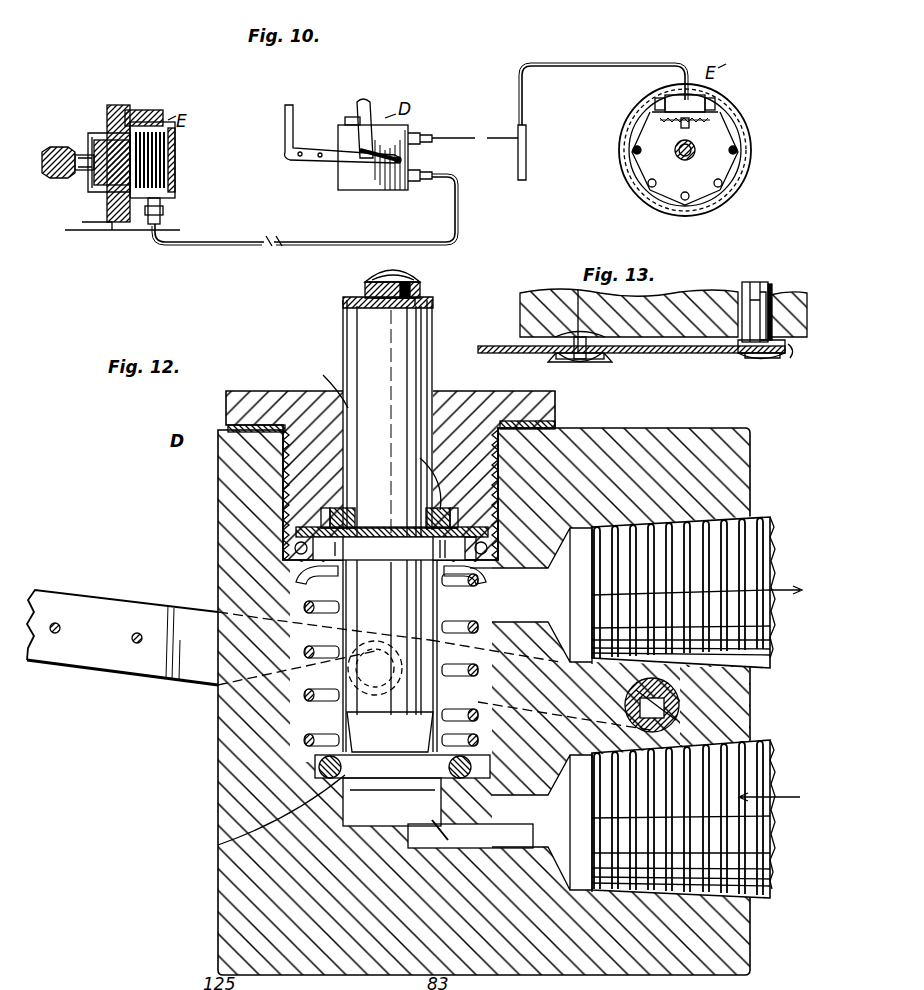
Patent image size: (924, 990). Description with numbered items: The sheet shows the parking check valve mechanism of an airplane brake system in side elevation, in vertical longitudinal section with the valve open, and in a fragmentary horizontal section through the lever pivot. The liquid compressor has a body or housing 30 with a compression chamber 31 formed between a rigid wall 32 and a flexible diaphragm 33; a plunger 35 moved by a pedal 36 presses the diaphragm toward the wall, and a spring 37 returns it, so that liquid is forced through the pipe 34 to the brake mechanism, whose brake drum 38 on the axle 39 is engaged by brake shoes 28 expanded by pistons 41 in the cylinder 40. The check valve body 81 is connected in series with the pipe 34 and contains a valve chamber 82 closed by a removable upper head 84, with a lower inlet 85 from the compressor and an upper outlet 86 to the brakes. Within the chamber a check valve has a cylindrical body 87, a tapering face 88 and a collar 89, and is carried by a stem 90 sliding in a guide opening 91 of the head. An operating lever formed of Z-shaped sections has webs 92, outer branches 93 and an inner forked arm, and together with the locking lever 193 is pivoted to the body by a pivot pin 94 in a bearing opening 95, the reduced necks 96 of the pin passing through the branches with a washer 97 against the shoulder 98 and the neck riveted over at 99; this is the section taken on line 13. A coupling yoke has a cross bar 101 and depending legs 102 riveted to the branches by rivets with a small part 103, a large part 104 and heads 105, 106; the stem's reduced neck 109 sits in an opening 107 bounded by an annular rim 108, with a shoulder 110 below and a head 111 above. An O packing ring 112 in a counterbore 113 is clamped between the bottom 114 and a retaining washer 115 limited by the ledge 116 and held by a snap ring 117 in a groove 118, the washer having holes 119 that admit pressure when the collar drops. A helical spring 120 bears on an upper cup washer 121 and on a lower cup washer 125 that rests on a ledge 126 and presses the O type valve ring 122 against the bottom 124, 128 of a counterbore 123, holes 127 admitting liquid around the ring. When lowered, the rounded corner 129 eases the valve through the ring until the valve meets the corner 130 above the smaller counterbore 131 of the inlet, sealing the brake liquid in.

In FIG. 10, the section line 13 is at (338, 132).
In FIG. 10, the brake shoes 28 is at (640, 130).
In FIG. 10, the body or housing 30 is at (112, 222).
In FIG. 10, the compression chamber 31 is at (140, 125).
In FIG. 10, the rigid wall 32 is at (175, 150).
In FIG. 10, the flexible diaphragm 33 is at (105, 133).
In FIG. 10, the pipe or conduit 34 is at (606, 68).
In FIG. 12, the pipe or conduit 34 is at (775, 530).
In FIG. 10, the plunger 35 is at (98, 175).
In FIG. 10, the pedal 36 is at (58, 150).
In FIG. 10, the spring 37 is at (168, 185).
In FIG. 10, the brake drum 38 is at (628, 158).
In FIG. 10, the axle 39 is at (685, 162).
In FIG. 10, the cylinder 40 is at (705, 100).
In FIG. 10, the pistons 41 is at (660, 102).
In FIG. 10, the valve body 81 is at (345, 182).
In FIG. 13, the valve body 81 is at (522, 307).
In FIG. 12, the valve body 81 is at (232, 822).
In FIG. 12, the valve chamber 82 is at (228, 684).
In FIG. 12, the upper head or bushing 84 is at (330, 402).
In FIG. 12, the lower inlet 85 is at (542, 822).
In FIG. 12, the upper liquid outlet 86 is at (542, 595).
In FIG. 12, the cylindrical body 87 is at (390, 656).
In FIG. 12, the downwardly tapering face 88 is at (390, 732).
In FIG. 12, the collar 89 is at (394, 548).
In FIG. 12, the valve stem 90 is at (389, 510).
In FIG. 12, the guide opening 91 is at (329, 382).
In FIG. 12, the webs 92 is at (212, 612).
In FIG. 10, the front bars or branches 93 is at (378, 165).
In FIG. 13, the front bars or branches 93 is at (670, 355).
In FIG. 13, the pivot pin 94 is at (755, 282).
In FIG. 12, the pivot pin 94 is at (670, 712).
In FIG. 13, the transverse bearing opening 95 is at (772, 290).
In FIG. 12, the transverse bearing opening 95 is at (683, 700).
In FIG. 13, the reduced necks 96 is at (768, 358).
In FIG. 13, the washer 97 is at (799, 359).
In FIG. 13, the shoulder 98 is at (757, 316).
In FIG. 13, the riveted end 99 is at (740, 360).
In FIG. 12, the cross bar of coupling yoke 101 is at (345, 298).
In FIG. 10, the depending legs 102 is at (362, 112).
In FIG. 13, the depending legs 102 is at (600, 358).
In FIG. 12, the depending legs 102 is at (344, 325).
In FIG. 13, the small diameter part of rivet 103 is at (580, 340).
In FIG. 13, the large diameter part of rivet 104 is at (598, 362).
In FIG. 13, the rivet head 105 is at (556, 360).
In FIG. 13, the rivet head 106 is at (572, 286).
In FIG. 12, the opening 107 is at (420, 290).
In FIG. 12, the annular rim 108 is at (410, 284).
In FIG. 12, the reduced neck 109 is at (398, 278).
In FIG. 12, the shoulder 110 is at (370, 312).
In FIG. 12, the head 111 is at (376, 276).
In FIG. 12, the O packing ring 112 is at (362, 505).
In FIG. 12, the counterbore 113 is at (320, 522).
In FIG. 12, the bottom of counterbore 114 is at (420, 460).
In FIG. 12, the retaining washer 115 is at (370, 532).
In FIG. 12, the annular stop shoulder or ledge 116 is at (310, 538).
In FIG. 12, the split snap ring 117 is at (296, 550).
In FIG. 12, the annular groove 118 is at (442, 547).
In FIG. 12, the holes 119 is at (351, 551).
In FIG. 12, the helical spring 120 is at (455, 620).
In FIG. 12, the cup-shaped washer 121 is at (492, 575).
In FIG. 12, the O type valve ring 122 is at (415, 783).
In FIG. 12, the counterbore 123 is at (318, 770).
In FIG. 12, the bottom of counterbore 124 is at (440, 836).
In FIG. 12, the cup-shaped washer 125 is at (300, 740).
In FIG. 12, the ledge 126 is at (470, 815).
In FIG. 12, the holes 127 is at (470, 700).
In FIG. 12, the bottom of counterbore 128 is at (228, 845).
In FIG. 12, the rounded corner 129 is at (360, 690).
In FIG. 12, the corner 130 is at (365, 782).
In FIG. 12, the counterbore 131 is at (392, 806).
In FIG. 10, the locking lever 193 is at (290, 160).
In FIG. 12, the locking lever 193 is at (122, 642).